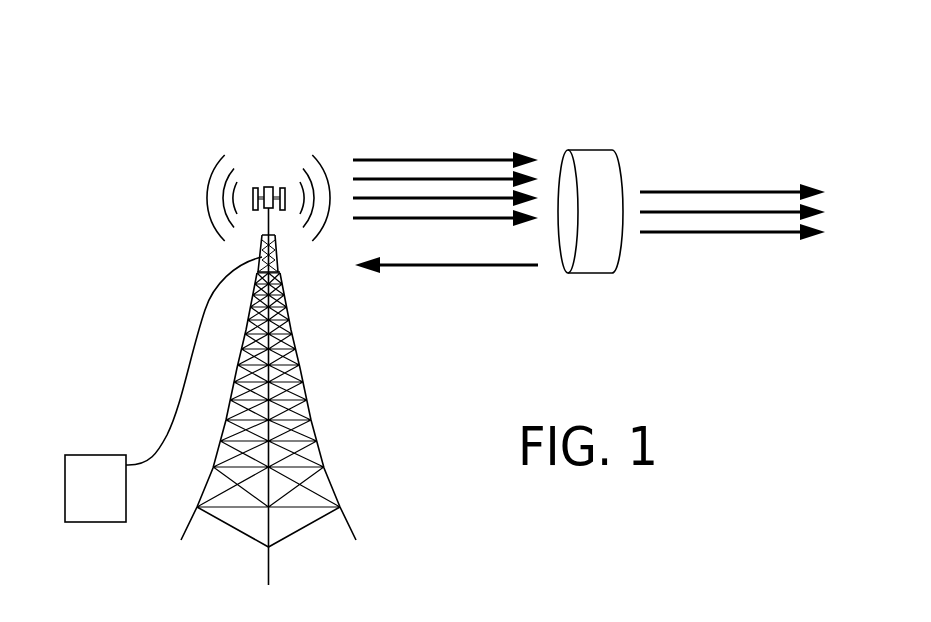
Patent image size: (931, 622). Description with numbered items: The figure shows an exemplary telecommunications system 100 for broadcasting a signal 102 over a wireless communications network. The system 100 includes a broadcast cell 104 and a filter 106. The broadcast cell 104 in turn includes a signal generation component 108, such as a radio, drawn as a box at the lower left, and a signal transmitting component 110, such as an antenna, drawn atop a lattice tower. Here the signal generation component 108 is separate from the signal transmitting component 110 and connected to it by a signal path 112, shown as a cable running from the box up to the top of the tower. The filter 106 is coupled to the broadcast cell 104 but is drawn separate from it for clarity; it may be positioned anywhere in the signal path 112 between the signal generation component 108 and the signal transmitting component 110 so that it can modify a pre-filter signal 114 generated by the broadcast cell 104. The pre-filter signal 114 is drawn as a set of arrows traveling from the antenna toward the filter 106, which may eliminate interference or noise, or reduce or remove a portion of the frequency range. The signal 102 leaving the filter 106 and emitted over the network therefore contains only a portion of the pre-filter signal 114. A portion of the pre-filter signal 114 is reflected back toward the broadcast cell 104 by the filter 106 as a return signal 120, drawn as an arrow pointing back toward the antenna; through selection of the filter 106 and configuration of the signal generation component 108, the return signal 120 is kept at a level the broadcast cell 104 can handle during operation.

The telecommunications system 100 is at (568, 50).
The signal 102 is at (725, 189).
The broadcast cell 104 is at (300, 366).
The filter 106 is at (590, 274).
The signal generation component 108 is at (103, 454).
The signal transmitting component 110 is at (268, 186).
The signal path 112 is at (199, 320).
The pre-filter signal 114 is at (442, 156).
The return signal 120 is at (450, 271).